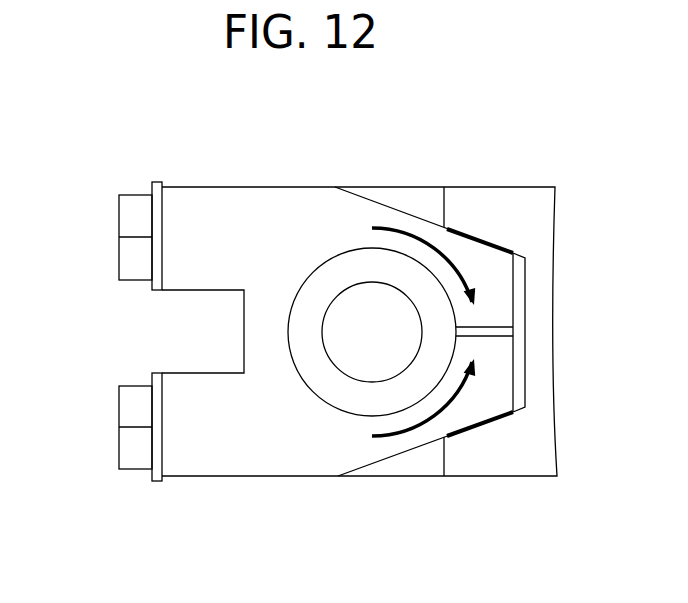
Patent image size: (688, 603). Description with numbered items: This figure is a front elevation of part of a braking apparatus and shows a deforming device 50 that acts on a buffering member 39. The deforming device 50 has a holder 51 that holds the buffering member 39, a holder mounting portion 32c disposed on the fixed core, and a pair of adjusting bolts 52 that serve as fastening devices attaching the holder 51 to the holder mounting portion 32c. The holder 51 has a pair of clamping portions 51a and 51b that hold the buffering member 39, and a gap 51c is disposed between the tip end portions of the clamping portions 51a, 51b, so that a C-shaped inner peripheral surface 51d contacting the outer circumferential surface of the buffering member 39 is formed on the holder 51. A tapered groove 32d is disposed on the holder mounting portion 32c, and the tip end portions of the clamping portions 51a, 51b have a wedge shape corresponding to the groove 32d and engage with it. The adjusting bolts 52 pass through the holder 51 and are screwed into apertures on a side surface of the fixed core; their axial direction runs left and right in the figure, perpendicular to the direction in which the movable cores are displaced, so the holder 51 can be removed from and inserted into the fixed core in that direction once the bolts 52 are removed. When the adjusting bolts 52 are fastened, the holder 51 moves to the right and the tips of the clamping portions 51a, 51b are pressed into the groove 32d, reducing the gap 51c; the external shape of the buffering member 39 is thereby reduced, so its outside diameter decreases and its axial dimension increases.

The deforming device 50 is at (157, 180).
The holder 51 is at (238, 476).
The clamping portion 51a is at (405, 212).
The clamping portion 51b is at (412, 450).
The gap 51c is at (490, 337).
The C-shaped inner peripheral surface 51d is at (342, 402).
The adjusting bolts 52 is at (119, 265).
The buffering member 39 is at (357, 265).
The holder mounting portion 32c is at (522, 465).
The tapered groove 32d is at (467, 425).